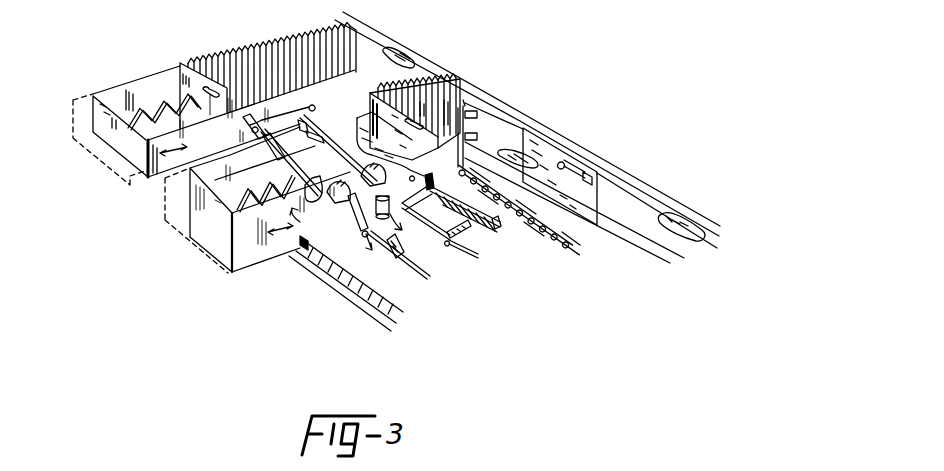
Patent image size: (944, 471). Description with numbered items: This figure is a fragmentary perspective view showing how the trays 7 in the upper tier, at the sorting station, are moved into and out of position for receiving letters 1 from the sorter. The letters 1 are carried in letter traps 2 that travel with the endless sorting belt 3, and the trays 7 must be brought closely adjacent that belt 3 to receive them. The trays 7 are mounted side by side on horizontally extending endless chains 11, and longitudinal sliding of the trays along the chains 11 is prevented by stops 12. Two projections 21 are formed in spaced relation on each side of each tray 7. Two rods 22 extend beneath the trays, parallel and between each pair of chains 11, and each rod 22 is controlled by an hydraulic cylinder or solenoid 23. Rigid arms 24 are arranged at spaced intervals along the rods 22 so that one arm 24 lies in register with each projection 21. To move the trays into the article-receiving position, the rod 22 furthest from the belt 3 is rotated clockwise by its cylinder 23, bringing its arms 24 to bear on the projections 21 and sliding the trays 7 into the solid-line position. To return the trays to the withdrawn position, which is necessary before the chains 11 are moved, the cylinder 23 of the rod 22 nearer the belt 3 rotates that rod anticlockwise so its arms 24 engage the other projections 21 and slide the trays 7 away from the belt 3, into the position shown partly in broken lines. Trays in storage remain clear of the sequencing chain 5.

The letters 1 is at (598, 184).
The letter conveyors or traps 2 is at (520, 152).
The endless belt conveyor 3 is at (473, 102).
The sequencing chain 5 is at (585, 240).
The trays 7 is at (160, 86).
The endless chains 11 is at (533, 250).
The stops 12 is at (303, 245).
The projections 21 is at (320, 88).
The rods 22 is at (478, 256).
The hydraulic cylinder or solenoid 23 is at (337, 222).
The rigid arms 24 is at (402, 250).